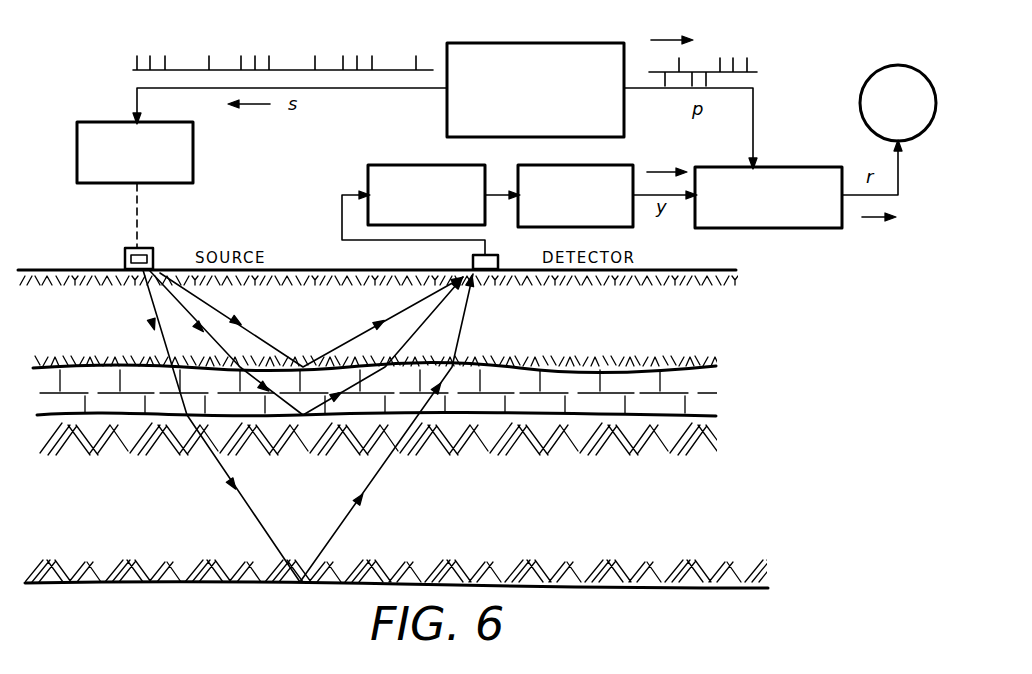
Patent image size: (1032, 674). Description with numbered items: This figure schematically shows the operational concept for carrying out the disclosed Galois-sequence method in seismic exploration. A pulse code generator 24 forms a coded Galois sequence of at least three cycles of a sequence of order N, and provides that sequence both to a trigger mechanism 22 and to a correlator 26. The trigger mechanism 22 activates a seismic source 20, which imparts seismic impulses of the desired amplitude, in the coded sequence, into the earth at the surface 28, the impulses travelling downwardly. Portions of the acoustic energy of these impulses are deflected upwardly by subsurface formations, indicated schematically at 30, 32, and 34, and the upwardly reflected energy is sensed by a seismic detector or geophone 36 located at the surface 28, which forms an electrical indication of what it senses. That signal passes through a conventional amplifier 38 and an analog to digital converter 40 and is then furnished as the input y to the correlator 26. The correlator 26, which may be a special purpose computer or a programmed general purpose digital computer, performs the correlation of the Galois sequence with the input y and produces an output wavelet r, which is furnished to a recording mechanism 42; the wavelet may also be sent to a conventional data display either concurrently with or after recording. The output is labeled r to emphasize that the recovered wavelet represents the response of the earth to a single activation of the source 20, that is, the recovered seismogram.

The seismic source 20 is at (150, 250).
The trigger mechanism 22 is at (193, 154).
The pulse code generator 24 is at (557, 42).
The correlator 26 is at (770, 228).
The surface 28 is at (278, 288).
The subsurface formation 30 is at (526, 367).
The subsurface formation 32 is at (661, 428).
The subsurface formation 34 is at (637, 587).
The seismic detector 36 is at (498, 259).
The amplifier 38 is at (406, 163).
The analog to digital converter 40 is at (583, 165).
The recording mechanism 42 is at (922, 133).